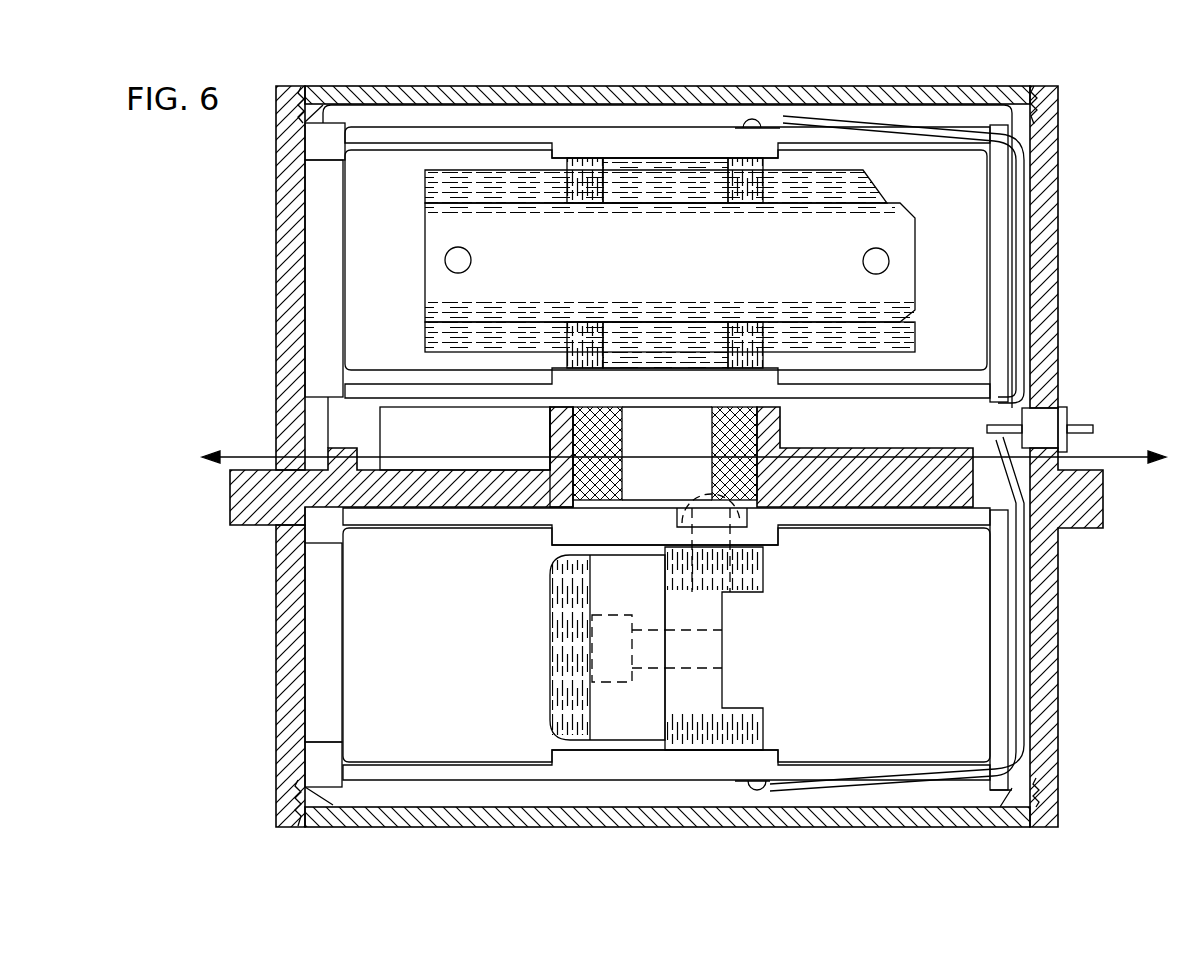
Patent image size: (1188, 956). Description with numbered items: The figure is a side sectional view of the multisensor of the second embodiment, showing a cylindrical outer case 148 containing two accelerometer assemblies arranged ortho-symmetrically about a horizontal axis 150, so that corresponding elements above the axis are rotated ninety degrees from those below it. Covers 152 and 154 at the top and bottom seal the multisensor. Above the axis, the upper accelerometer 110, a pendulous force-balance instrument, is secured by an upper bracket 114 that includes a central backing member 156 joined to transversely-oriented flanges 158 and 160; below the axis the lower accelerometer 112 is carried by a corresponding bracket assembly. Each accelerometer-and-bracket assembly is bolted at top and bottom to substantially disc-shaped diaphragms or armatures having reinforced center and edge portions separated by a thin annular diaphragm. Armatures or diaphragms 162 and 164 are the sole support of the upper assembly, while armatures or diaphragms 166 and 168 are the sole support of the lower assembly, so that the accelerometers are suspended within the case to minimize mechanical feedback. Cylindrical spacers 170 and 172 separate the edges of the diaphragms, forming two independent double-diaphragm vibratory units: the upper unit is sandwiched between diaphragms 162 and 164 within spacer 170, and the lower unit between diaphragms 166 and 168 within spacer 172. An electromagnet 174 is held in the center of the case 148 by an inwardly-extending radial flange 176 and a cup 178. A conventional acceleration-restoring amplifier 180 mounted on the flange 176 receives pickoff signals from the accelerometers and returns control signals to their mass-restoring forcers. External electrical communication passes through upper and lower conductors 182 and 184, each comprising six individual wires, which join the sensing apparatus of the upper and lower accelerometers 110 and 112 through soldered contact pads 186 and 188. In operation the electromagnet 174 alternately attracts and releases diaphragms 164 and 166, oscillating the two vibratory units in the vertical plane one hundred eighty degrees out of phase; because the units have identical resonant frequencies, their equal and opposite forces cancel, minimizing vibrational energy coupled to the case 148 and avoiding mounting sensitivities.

The upper accelerometer 110 is at (872, 192).
The lower accelerometer 112 is at (600, 597).
The upper bracket 114 is at (657, 256).
The cylindrical outer case 148 is at (692, 456).
The horizontal axis 150 is at (243, 455).
The cover 152 is at (312, 102).
The cover 154 is at (474, 813).
The central backing member 156 is at (908, 248).
The flange 158 is at (565, 168).
The flange 160 is at (567, 357).
The armature or diaphragm 162 is at (560, 140).
The armature or diaphragm 164 is at (770, 390).
The armature or diaphragm 166 is at (560, 535).
The armature or diaphragm 168 is at (553, 760).
The cylindrical spacer 170 is at (337, 207).
The cylindrical spacer 172 is at (335, 598).
The electromagnet 174 is at (612, 434).
The radial flange 176 is at (318, 495).
The cup 178 is at (556, 430).
The acceleration-restoring amplifier 180 is at (388, 426).
The upper conductor 182 is at (955, 137).
The lower conductor 184 is at (920, 775).
The soldered contact pad 186 is at (746, 123).
The soldered contact pad 188 is at (767, 787).